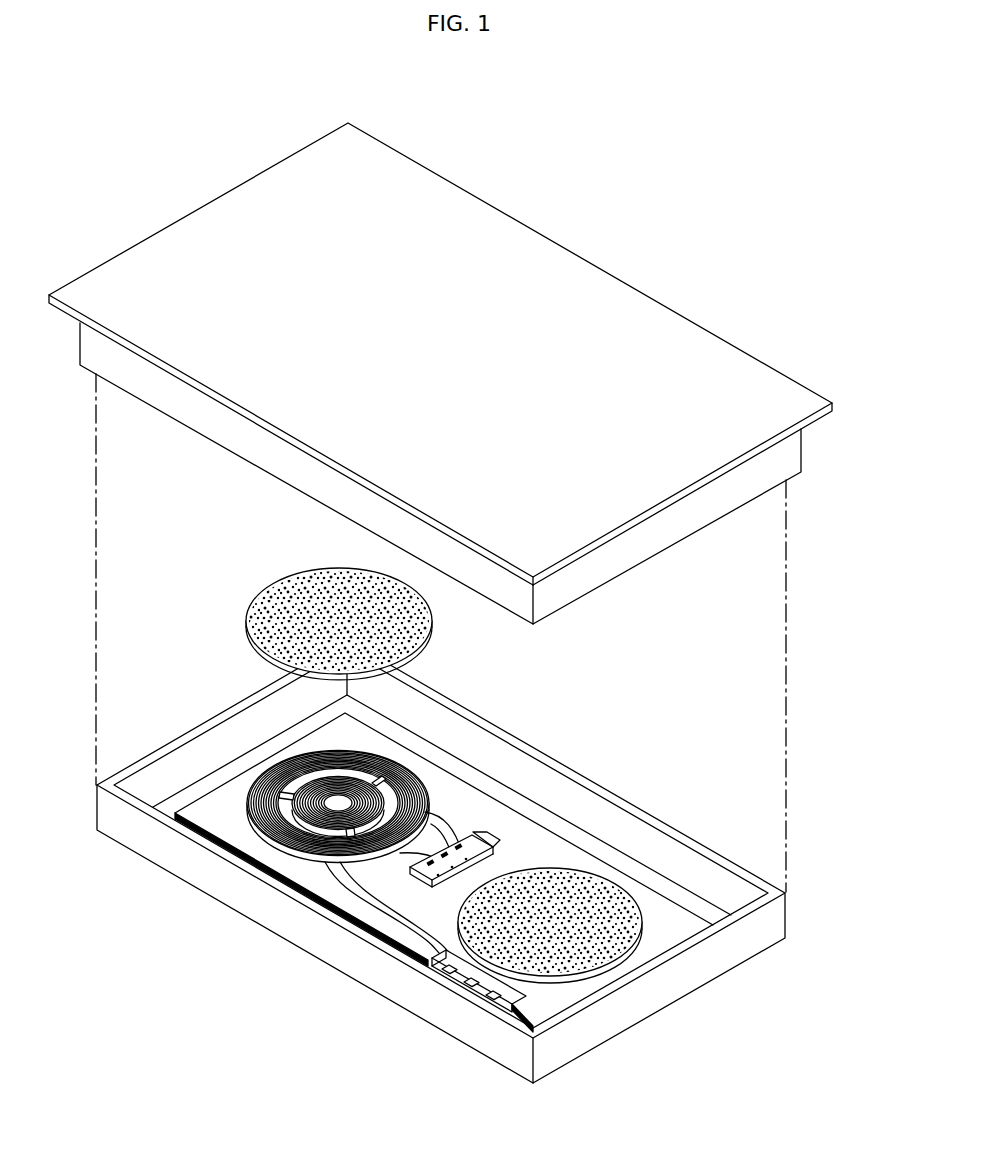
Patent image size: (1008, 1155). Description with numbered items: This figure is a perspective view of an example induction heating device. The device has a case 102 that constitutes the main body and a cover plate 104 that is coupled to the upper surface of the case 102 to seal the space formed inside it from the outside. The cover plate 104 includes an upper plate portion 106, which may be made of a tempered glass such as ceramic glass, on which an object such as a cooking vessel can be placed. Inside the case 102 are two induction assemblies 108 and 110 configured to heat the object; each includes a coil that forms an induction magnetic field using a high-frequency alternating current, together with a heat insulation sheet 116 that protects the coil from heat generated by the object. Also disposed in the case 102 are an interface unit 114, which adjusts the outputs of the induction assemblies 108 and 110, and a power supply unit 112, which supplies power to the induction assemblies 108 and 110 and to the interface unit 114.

The case 102 is at (353, 962).
The cover plate 104 is at (552, 208).
The upper plate portion 106 is at (730, 468).
The induction assembly 108 is at (252, 850).
The induction assembly 110 is at (563, 988).
The power supply unit 112 is at (498, 837).
The interface unit 114 is at (477, 990).
The heat insulation sheet 116 is at (267, 604).